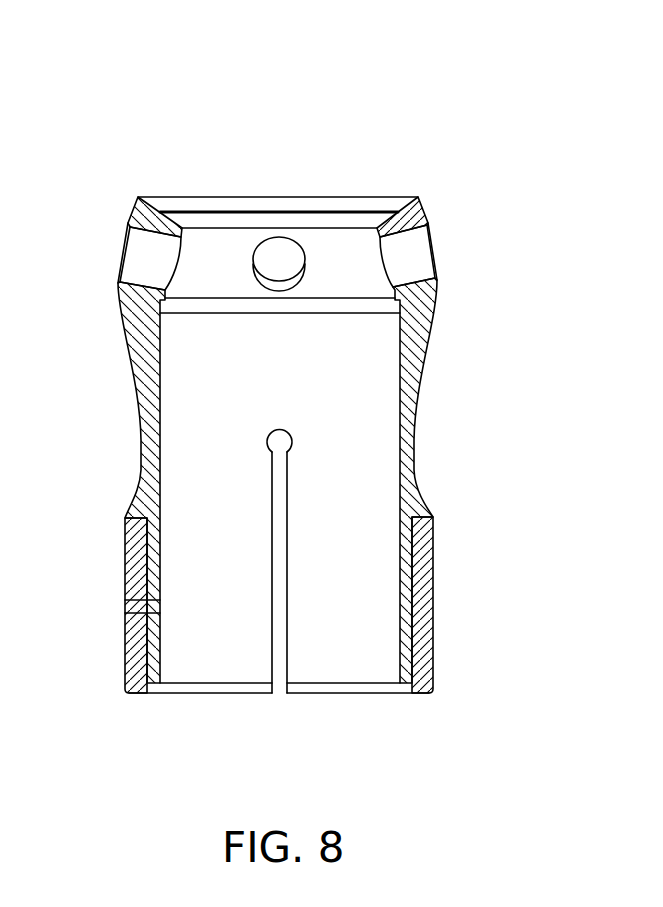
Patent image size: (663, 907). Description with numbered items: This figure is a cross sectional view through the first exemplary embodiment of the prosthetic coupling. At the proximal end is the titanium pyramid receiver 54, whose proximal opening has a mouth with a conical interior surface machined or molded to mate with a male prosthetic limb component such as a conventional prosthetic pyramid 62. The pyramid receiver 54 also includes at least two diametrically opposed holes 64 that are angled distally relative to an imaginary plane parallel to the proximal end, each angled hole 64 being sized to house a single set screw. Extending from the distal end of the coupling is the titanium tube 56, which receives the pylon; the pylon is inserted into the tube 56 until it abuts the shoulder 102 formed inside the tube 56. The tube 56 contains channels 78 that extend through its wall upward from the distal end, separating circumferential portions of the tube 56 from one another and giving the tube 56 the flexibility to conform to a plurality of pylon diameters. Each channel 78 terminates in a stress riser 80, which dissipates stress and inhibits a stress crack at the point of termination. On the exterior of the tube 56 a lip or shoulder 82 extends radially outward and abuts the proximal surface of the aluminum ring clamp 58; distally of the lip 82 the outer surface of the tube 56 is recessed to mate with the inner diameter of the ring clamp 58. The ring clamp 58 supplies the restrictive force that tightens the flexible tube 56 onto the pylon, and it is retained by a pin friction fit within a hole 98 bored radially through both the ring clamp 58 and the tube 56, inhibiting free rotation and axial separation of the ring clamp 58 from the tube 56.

The pyramid receiver 54 is at (160, 187).
The prosthetic pyramid 62 is at (410, 197).
The angled hole 64 is at (422, 263).
The shoulder 102 is at (425, 304).
The tube 56 is at (145, 457).
The lip or shoulder 82 is at (423, 505).
The ring clamp 58 is at (437, 615).
The hole 98 is at (125, 604).
The stress riser 80 is at (279, 430).
The channel 78 is at (280, 694).